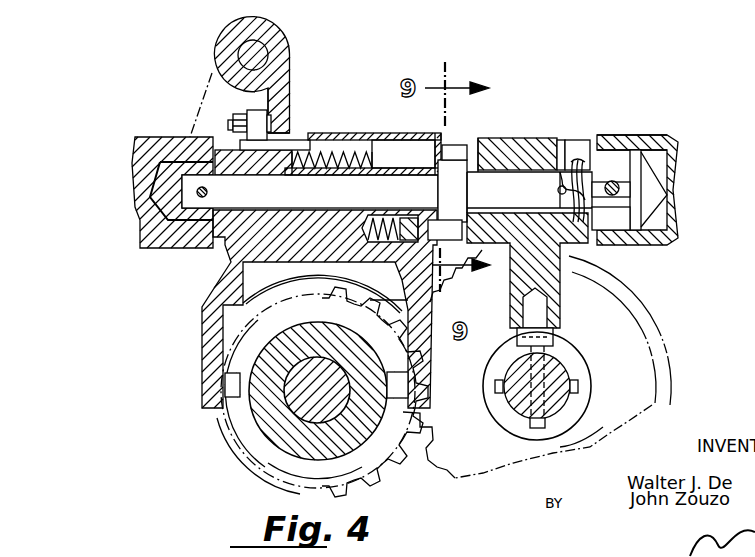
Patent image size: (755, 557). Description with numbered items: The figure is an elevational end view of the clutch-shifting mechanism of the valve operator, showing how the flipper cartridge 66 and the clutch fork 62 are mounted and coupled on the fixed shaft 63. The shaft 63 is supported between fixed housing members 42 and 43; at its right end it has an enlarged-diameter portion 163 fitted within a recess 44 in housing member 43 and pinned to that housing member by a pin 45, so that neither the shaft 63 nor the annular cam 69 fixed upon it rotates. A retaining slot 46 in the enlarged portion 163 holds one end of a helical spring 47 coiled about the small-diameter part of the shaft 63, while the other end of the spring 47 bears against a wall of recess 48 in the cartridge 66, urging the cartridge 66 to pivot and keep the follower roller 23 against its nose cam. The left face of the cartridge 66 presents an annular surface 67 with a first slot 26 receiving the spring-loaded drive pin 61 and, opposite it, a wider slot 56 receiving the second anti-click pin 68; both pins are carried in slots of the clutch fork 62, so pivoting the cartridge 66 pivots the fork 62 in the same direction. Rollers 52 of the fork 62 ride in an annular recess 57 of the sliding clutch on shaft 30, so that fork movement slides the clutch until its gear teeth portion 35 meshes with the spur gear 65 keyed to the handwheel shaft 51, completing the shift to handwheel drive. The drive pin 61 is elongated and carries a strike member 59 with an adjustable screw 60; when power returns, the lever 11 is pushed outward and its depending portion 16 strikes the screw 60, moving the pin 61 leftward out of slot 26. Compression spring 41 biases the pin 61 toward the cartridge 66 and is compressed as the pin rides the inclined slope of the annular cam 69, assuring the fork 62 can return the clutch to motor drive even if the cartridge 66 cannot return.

The lever 11 is at (277, 47).
The depending portion 16 is at (291, 93).
The follower roller 23 is at (553, 338).
The first recess or slot 26 is at (480, 143).
The shaft 30 is at (307, 403).
The spur gear 35 is at (390, 466).
The compression spring 41 is at (322, 150).
The fixed housing member 42 is at (148, 153).
The fixed housing member 43 is at (667, 232).
The recess 44 is at (650, 200).
The pin 45 is at (612, 185).
The retaining slot 46 is at (627, 193).
The helical spring 47 is at (585, 167).
The recess 48 is at (580, 147).
The handwheel shaft 51 is at (565, 380).
The rollers 52 is at (233, 388).
The second wider slot 56 is at (497, 248).
The annular recess 57 is at (263, 428).
The strike member 59 is at (253, 117).
The adjustable screw 60 is at (229, 123).
The spring-loaded drive pin 61 is at (378, 134).
The clutch fork 62 is at (403, 138).
The fixed shaft 63 is at (533, 180).
The spur gear 65 is at (657, 327).
The flipper cartridge 66 is at (522, 140).
The annular surface 67 is at (462, 143).
The second spring-loaded pin 68 is at (413, 217).
The annular cam 69 is at (450, 192).
The enlarged-diameter portion 163 is at (618, 223).